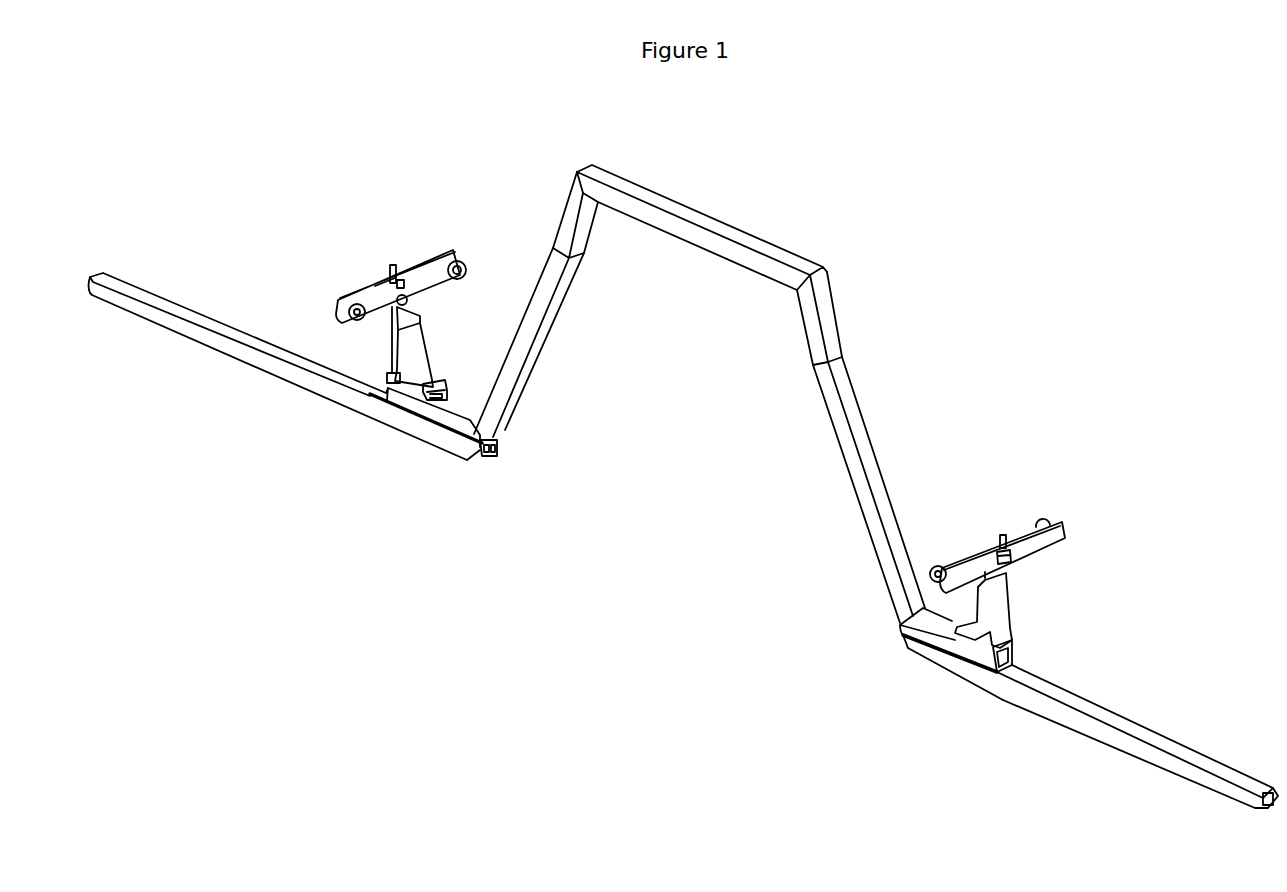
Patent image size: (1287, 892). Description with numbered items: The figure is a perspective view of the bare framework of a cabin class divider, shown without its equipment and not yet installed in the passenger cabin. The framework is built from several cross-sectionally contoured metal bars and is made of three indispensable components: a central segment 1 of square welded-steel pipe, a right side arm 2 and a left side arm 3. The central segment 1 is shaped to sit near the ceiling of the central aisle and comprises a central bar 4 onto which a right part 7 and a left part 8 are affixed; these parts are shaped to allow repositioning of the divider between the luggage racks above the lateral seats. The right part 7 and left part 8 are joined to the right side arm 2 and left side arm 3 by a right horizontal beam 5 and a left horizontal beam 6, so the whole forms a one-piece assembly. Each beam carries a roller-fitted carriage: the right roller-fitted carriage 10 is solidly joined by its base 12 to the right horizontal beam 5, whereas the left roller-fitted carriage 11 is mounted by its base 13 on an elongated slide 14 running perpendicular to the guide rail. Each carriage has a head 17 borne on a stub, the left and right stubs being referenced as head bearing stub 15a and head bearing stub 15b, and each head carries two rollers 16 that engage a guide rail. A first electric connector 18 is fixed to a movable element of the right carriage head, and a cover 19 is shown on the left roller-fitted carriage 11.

The central segment 1 is at (740, 192).
The right side arm 2 is at (1170, 745).
The left side arm 3 is at (187, 312).
The central bar 4 is at (711, 245).
The right horizontal beam 5 is at (932, 637).
The left horizontal beam 6 is at (445, 420).
The right part 7 is at (858, 493).
The left part 8 is at (536, 343).
The right roller-fitted carriage 10 is at (1097, 533).
The left roller-fitted carriage 11 is at (363, 247).
The base 12 is at (1017, 637).
The base 13 is at (427, 380).
The slide 14 is at (444, 384).
The head bearing stub 15a is at (393, 266).
The head bearing stub 15b is at (1003, 540).
The roller 16 is at (468, 262).
The head 17 is at (373, 280).
The first electric connector 18 is at (1017, 558).
The cover 19 is at (411, 300).